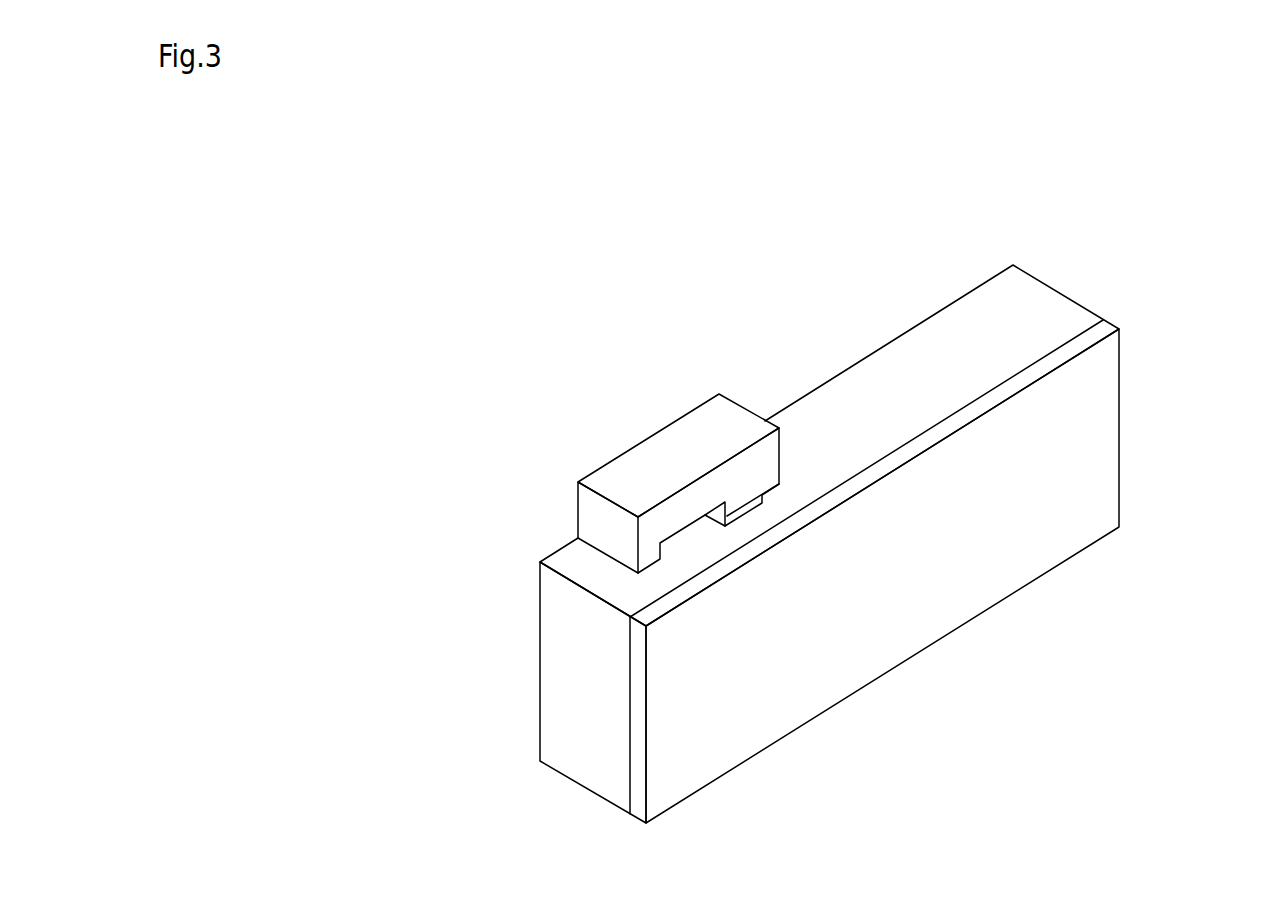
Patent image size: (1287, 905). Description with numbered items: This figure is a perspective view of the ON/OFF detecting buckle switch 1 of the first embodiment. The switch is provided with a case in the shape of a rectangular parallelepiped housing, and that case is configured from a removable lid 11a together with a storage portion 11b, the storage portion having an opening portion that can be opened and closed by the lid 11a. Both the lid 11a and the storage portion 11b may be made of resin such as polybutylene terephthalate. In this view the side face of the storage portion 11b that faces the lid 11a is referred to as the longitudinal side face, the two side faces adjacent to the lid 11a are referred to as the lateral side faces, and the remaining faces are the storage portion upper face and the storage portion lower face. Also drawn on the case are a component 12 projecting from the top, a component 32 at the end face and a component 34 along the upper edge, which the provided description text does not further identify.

The ON/OFF detecting buckle switch 1 is at (866, 466).
The lid 11a is at (1117, 492).
The storage portion 11b is at (826, 386).
The terminal block 12 is at (667, 426).
The end plate 32 is at (556, 692).
The top plate 34 is at (1034, 304).